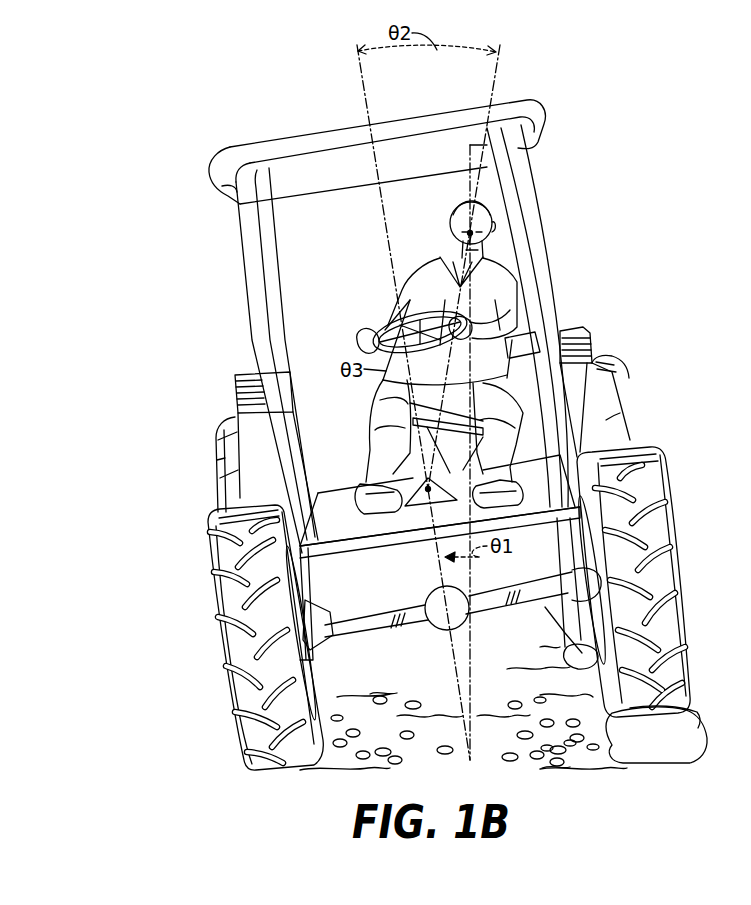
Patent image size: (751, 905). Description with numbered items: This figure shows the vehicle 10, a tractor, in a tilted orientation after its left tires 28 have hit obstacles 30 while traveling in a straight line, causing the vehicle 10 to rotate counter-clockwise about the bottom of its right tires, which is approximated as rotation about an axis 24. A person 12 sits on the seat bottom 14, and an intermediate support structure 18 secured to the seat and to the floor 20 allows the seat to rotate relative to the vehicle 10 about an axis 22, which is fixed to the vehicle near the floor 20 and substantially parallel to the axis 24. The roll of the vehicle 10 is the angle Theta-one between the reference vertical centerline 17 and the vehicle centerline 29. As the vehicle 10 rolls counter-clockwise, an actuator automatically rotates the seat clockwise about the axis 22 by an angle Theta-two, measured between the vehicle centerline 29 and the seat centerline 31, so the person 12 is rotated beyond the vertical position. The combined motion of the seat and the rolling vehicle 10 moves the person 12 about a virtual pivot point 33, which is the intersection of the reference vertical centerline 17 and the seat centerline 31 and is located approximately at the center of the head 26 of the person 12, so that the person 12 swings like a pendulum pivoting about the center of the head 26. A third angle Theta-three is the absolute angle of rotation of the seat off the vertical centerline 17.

The vehicle 10 is at (228, 150).
The person 12 is at (434, 254).
The seat bottom 14 is at (430, 402).
The reference vertical centerline 17 is at (470, 160).
The intermediate support structure 18 is at (417, 448).
The floor 20 is at (337, 523).
The axis 22 is at (426, 494).
The axis 24 is at (471, 760).
The head 26 is at (455, 214).
The left tires 28 is at (628, 380).
The vehicle centerline 29 is at (358, 86).
The obstacles 30 is at (568, 654).
The seat centerline 31 is at (500, 75).
The virtual pivot point 33 is at (472, 233).